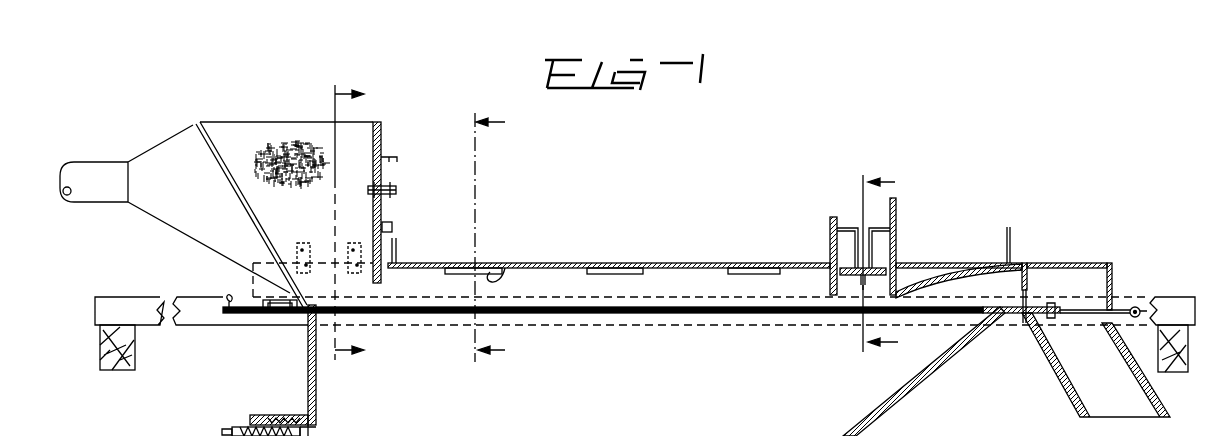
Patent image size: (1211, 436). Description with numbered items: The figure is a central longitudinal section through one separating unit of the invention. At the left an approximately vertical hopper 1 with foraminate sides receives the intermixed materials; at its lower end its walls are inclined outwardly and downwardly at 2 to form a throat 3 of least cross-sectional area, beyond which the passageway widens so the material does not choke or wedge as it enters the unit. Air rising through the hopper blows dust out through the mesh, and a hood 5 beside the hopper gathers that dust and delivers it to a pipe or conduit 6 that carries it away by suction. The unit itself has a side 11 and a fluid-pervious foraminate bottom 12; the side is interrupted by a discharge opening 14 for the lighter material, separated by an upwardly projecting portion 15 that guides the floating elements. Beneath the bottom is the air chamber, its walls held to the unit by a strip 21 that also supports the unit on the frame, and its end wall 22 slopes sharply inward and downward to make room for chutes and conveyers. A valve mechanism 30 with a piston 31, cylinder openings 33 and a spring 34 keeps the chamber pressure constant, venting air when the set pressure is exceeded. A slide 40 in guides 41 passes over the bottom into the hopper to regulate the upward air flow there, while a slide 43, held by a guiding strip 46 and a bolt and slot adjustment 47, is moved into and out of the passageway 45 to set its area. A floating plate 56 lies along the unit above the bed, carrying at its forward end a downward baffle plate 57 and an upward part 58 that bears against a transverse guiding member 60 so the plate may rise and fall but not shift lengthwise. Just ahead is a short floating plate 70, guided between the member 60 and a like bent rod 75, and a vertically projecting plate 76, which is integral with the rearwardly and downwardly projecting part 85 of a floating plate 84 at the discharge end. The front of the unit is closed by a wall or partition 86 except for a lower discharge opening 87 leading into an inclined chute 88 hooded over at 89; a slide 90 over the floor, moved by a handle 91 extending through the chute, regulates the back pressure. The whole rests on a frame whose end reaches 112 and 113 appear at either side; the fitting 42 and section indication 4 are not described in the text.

The hopper 1 is at (267, 138).
The outwardly and downwardly inclined hopper walls 2 is at (880, 262).
The part of least cross-sectional area 3 is at (490, 227).
The section line 4 is at (343, 219).
The hood 5 is at (162, 153).
The pipe or conduit 6 is at (97, 177).
The side of separating unit 11 is at (250, 320).
The bottom 12 is at (729, 315).
The discharge opening 14 is at (507, 268).
The upwardly projecting portion 15 is at (560, 268).
The strip 21 is at (187, 300).
The end wall of air chamber 22 is at (930, 395).
The valve mechanism 30 is at (258, 415).
The piston 31 is at (305, 431).
The openings 33 is at (292, 415).
The spring 34 is at (232, 428).
The slide 40 is at (246, 316).
The guides 41 is at (277, 314).
The fitting 42 is at (230, 300).
The slide 43 is at (384, 214).
The passageway 45 is at (375, 290).
The guiding strip 46 is at (393, 228).
The bolt and slot adjustment 47 is at (394, 190).
The plate 56 is at (612, 268).
The baffle plate 57 is at (830, 289).
The upwardly extending part 58 is at (830, 235).
The guiding member 60 is at (845, 228).
The plate 70 is at (876, 266).
The bent rod 75 is at (882, 228).
The vertically projecting plate 76 is at (897, 262).
The plate 84 is at (987, 263).
The rearwardly and downwardly projecting part 85 is at (900, 288).
The wall or partition 86 is at (1026, 290).
The discharge opening 87 is at (1029, 290).
The chute 88 is at (1080, 372).
The hood 89 is at (1112, 278).
The slide 90 is at (988, 314).
The handle 91 is at (1138, 307).
The end reach 112 is at (100, 340).
The end reach 113 is at (1165, 372).